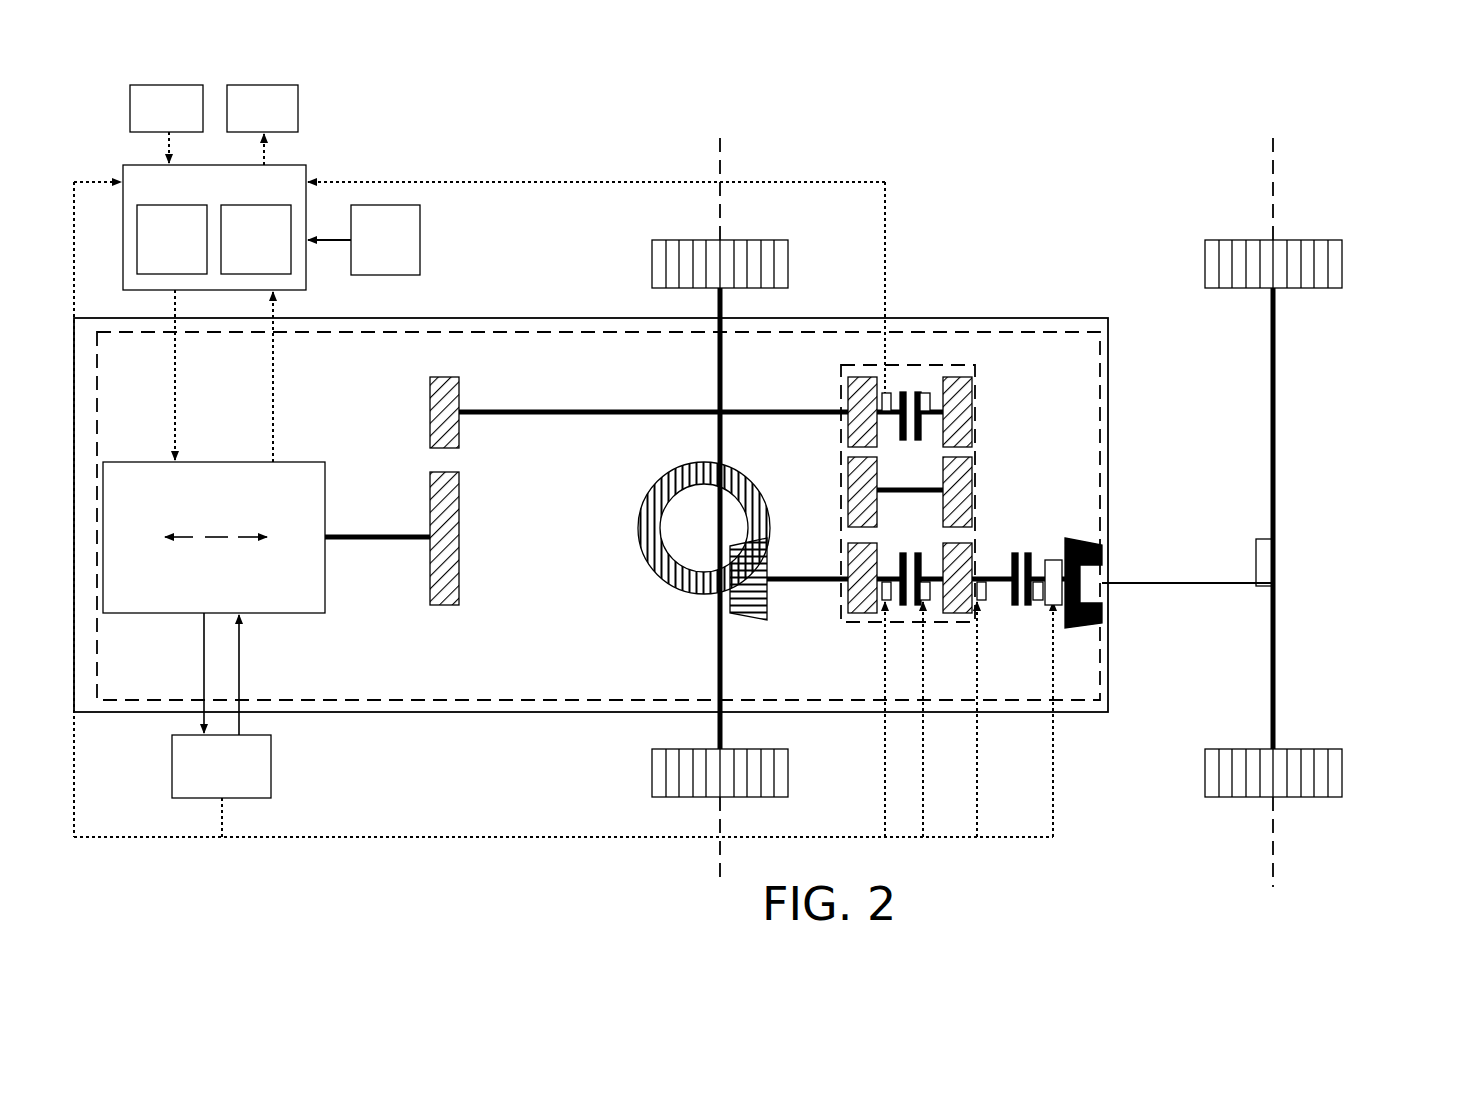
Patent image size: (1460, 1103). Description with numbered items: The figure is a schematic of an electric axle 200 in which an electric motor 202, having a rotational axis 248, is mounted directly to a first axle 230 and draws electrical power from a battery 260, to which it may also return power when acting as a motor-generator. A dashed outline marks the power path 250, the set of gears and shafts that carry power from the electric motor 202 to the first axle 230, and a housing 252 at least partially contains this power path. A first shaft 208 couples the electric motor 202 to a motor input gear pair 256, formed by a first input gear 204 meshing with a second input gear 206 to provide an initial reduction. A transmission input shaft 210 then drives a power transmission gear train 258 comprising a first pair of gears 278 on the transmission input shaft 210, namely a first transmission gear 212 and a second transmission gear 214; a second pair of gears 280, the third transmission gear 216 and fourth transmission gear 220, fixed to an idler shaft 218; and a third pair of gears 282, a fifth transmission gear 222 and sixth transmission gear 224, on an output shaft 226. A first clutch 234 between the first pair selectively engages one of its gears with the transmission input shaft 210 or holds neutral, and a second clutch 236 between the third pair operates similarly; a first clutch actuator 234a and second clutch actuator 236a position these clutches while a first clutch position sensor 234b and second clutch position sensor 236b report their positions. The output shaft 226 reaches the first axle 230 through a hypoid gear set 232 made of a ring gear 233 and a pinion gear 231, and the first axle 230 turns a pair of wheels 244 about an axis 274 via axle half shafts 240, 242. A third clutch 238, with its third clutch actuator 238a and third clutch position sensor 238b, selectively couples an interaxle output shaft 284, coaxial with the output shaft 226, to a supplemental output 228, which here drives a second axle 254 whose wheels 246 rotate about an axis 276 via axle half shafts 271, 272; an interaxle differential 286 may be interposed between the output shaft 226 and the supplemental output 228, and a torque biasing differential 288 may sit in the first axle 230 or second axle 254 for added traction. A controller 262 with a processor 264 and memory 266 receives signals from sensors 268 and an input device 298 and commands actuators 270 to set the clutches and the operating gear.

The electric axle 200 is at (1385, 125).
The electric motor 202 is at (214, 537).
The first input gear 204 is at (443, 605).
The second input gear 206 is at (440, 377).
The first shaft 208 is at (355, 537).
The transmission input shaft 210 is at (562, 412).
The first transmission gear 212 is at (842, 412).
The second transmission gear 214 is at (975, 412).
The third transmission gear 216 is at (842, 478).
The idler shaft 218 is at (905, 490).
The fourth transmission gear 220 is at (975, 465).
The fifth transmission gear 222 is at (842, 540).
The sixth transmission gear 224 is at (975, 545).
The output shaft 226 is at (784, 579).
The supplemental output 228 is at (1092, 628).
The first axle 230 is at (690, 358).
The pinion gear 231 is at (745, 619).
The hypoid gear set 232 is at (628, 492).
The ring gear 233 is at (660, 580).
The first clutch 234 is at (952, 360).
The first clutch actuator 234a is at (887, 391).
The first clutch position sensor 234b is at (933, 410).
The second clutch 236 is at (919, 653).
The second clutch actuator 236a is at (888, 603).
The second clutch position sensor 236b is at (922, 603).
The third clutch 238 is at (1041, 653).
The third clutch actuator 238a is at (981, 603).
The third clutch position sensor 238b is at (1036, 603).
The axle half shaft 240 is at (718, 400).
The axle half shaft 242 is at (718, 675).
The wheels 244 is at (712, 240).
The wheels 246 is at (1262, 240).
The rotational axis 248 is at (252, 536).
The power path 250 is at (520, 700).
The housing 252 is at (412, 318).
The second axle 254 is at (1323, 540).
The motor input gear pair 256 is at (392, 395).
The power transmission gear train 258 is at (972, 365).
The battery 260 is at (221, 705).
The controller 262 is at (214, 227).
The processor 264 is at (172, 239).
The memory 266 is at (256, 239).
The sensors 268 is at (166, 108).
The actuators 270 is at (262, 108).
The axle half shaft 271 is at (1276, 420).
The axle half shaft 272 is at (1276, 690).
The axis 274 is at (720, 150).
The axis 276 is at (1273, 150).
The first pair of gears 278 is at (835, 398).
The second pair of gears 280 is at (838, 458).
The third pair of gears 282 is at (845, 520).
The interaxle output shaft 284 is at (983, 578).
The interaxle differential 286 is at (1048, 560).
The torque biasing differential 288 is at (1262, 539).
The input device 298 is at (364, 240).